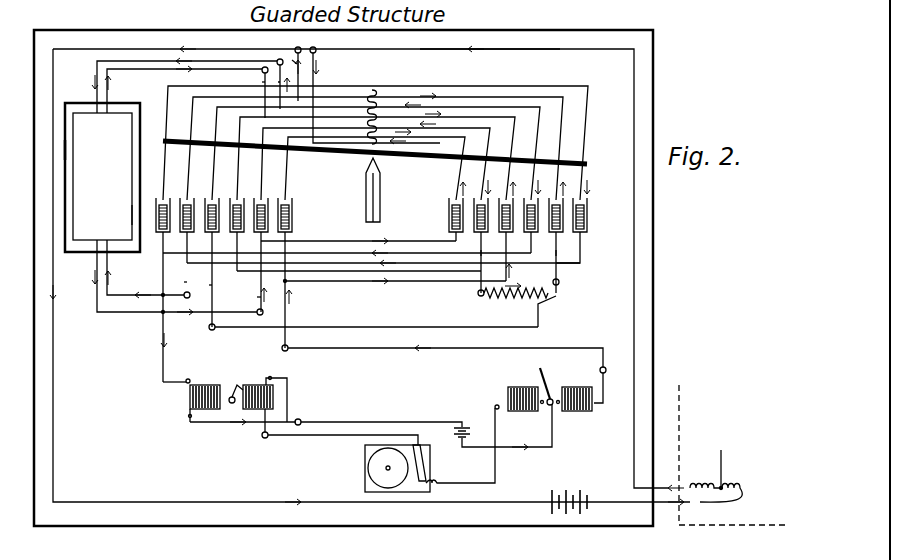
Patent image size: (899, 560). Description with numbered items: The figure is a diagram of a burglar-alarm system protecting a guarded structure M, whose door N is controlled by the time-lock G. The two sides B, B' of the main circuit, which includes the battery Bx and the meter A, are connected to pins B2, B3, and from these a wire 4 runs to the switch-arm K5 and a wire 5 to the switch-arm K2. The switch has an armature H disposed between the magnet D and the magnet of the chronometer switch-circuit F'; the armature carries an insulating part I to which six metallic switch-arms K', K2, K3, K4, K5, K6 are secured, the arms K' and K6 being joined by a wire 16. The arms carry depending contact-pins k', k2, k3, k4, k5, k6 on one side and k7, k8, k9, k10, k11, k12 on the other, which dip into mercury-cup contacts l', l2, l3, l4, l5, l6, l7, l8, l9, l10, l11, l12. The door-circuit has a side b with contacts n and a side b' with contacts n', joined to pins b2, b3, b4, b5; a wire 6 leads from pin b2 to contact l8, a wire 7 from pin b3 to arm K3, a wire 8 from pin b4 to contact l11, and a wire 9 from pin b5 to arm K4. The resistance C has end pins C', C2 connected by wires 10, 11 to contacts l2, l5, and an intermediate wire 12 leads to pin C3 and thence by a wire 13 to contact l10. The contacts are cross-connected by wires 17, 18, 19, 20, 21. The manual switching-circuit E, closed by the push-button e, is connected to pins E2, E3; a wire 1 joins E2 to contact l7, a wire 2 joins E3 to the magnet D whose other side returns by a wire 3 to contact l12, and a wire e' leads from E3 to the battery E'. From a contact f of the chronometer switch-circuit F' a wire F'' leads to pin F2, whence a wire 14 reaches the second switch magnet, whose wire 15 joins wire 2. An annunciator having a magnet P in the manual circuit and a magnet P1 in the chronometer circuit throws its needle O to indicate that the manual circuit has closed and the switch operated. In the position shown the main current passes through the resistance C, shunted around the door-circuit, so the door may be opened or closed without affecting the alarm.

The guarded structure M is at (655, 284).
The main circuit side B is at (370, 269).
The main circuit side B' is at (481, 41).
The pin B2 is at (294, 65).
The pin B3 is at (375, 86).
The door N is at (102, 177).
The door-circuit side b is at (75, 148).
The door-circuit side b' is at (121, 215).
The door contact n is at (172, 186).
The door contact n' is at (183, 182).
The pin b2 is at (265, 317).
The pin b3 is at (278, 79).
The pin b4 is at (193, 300).
The pin b5 is at (262, 69).
The wire 4 is at (291, 56).
The wire 5 is at (318, 80).
The wire 7 is at (276, 81).
The wire 9 is at (260, 81).
The switch-arm K' is at (381, 143).
The switch-arm K2 is at (475, 140).
The switch-arm K3 is at (500, 133).
The switch-arm K4 is at (525, 125).
The switch-arm K5 is at (548, 117).
The switch-arm K6 is at (572, 110).
The wire 16 is at (378, 93).
The insulating part I is at (410, 165).
The contact-pin k' is at (454, 207).
The contact-pin k2 is at (479, 206).
The contact-pin k3 is at (504, 207).
The contact-pin k4 is at (529, 206).
The contact-pin k5 is at (554, 207).
The contact-pin k6 is at (578, 206).
The contact-pin k7 is at (282, 207).
The contact-pin k8 is at (258, 207).
The contact-pin k9 is at (234, 207).
The contact-pin k10 is at (208, 207).
The contact-pin k11 is at (183, 207).
The contact-pin k12 is at (159, 207).
The mercury-cup contact l' is at (430, 228).
The mercury-cup contact l2 is at (471, 262).
The mercury-cup contact l3 is at (500, 256).
The mercury-cup contact l4 is at (522, 242).
The mercury-cup contact l5 is at (547, 262).
The mercury-cup contact l6 is at (587, 229).
The mercury-cup contact l7 is at (291, 229).
The mercury-cup contact l8 is at (256, 272).
The mercury-cup contact l9 is at (229, 251).
The mercury-cup contact l10 is at (203, 279).
The mercury-cup contact l11 is at (178, 247).
The mercury-cup contact l12 is at (153, 307).
The wire 10 is at (480, 250).
The wire 11 is at (556, 250).
The wire 17 is at (358, 238).
The wire 18 is at (359, 267).
The wire 19 is at (395, 278).
The wire 20 is at (347, 250).
The wire 21 is at (383, 260).
The wire 1 is at (289, 311).
The wire 3 is at (162, 331).
The wire 6 is at (255, 295).
The wire 8 is at (182, 280).
The wire 13 is at (205, 283).
The resistance C is at (516, 300).
The pin C' is at (468, 296).
The pin C2 is at (559, 281).
The pin C3 is at (370, 336).
The wire 12 is at (532, 319).
The manual switching-circuit E is at (445, 349).
The battery E' is at (503, 423).
The pin E2 is at (289, 350).
The pin E3 is at (301, 421).
The push-button e is at (609, 384).
The wire e' is at (381, 415).
The magnet D is at (189, 400).
The wire 2 is at (190, 421).
The armature H is at (234, 392).
The chronometer switch-circuit F' is at (275, 400).
The wire 15 is at (268, 384).
The wire 14 is at (262, 431).
The pin F2 is at (262, 438).
The wire F'' is at (462, 444).
The time-lock G is at (388, 468).
The contact f is at (432, 456).
The annunciator magnet P1 is at (510, 386).
The annunciator needle O is at (559, 380).
The annunciator magnet P is at (577, 408).
The battery Bx is at (569, 494).
The meter A is at (732, 468).